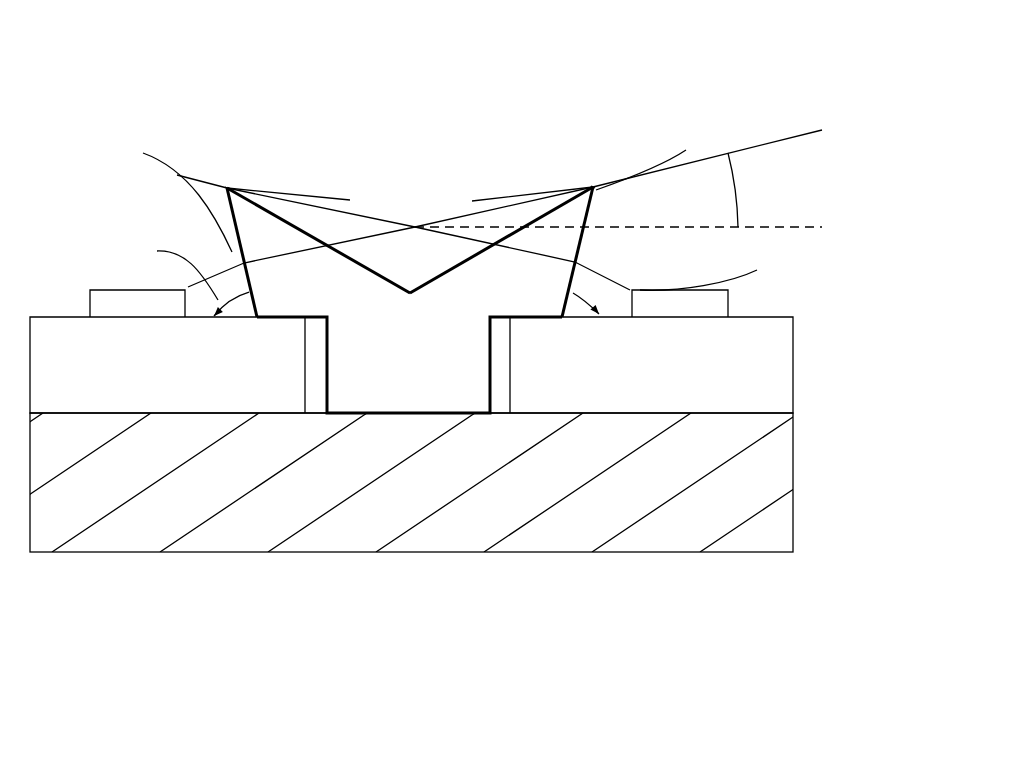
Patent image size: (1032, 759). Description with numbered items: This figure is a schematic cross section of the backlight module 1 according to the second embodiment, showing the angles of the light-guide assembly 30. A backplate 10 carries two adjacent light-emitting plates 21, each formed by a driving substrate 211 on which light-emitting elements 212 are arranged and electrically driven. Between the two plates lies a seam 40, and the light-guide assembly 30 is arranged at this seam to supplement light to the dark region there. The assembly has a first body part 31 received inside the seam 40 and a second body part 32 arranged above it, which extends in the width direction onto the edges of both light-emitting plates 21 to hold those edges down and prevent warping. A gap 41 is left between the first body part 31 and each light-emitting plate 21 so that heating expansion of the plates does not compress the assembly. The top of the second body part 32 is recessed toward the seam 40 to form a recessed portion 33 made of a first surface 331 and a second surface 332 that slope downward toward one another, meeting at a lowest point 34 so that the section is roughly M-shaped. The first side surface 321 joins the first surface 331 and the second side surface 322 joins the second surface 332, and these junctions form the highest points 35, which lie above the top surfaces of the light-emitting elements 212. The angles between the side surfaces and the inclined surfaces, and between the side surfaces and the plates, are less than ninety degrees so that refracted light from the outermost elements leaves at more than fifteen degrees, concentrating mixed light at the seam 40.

The backlight module 1 is at (66, 45).
The backplate 10 is at (240, 530).
The light-emitting plate 21 is at (475, 351).
The driving substrate 211 is at (690, 378).
The light-emitting element 212 is at (690, 310).
The light-guide assembly 30 is at (430, 383).
The first body part 31 is at (430, 404).
The second body part 32 is at (442, 357).
The recessed portion 33 is at (442, 193).
The first surface 331 is at (314, 228).
The second surface 332 is at (506, 228).
The lowest point 34 is at (410, 291).
The highest point 35 is at (227, 188).
The first side surface 321 is at (235, 255).
The second side surface 322 is at (585, 257).
The seam 40 is at (517, 362).
The gap 41 is at (315, 383).